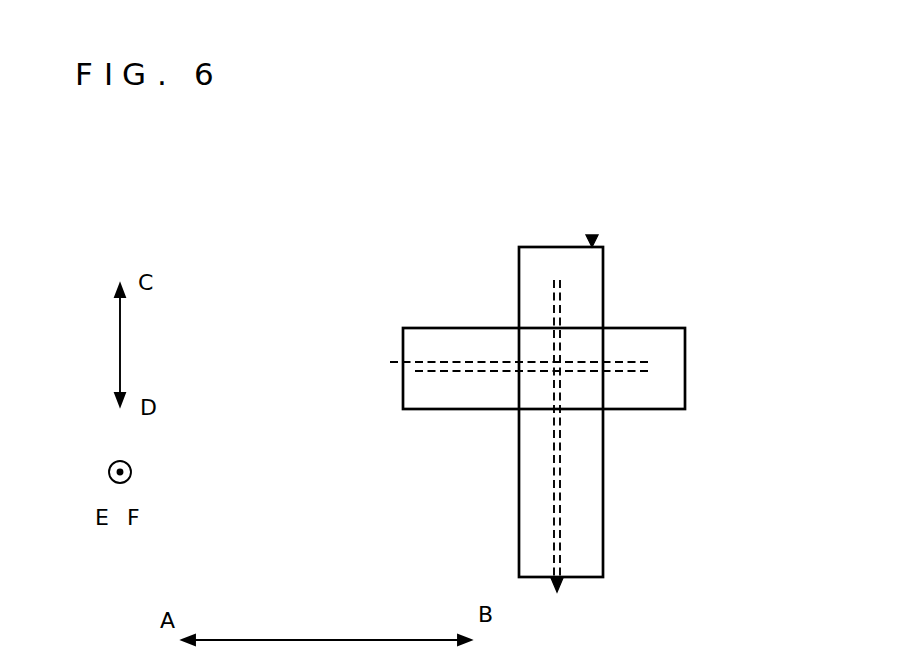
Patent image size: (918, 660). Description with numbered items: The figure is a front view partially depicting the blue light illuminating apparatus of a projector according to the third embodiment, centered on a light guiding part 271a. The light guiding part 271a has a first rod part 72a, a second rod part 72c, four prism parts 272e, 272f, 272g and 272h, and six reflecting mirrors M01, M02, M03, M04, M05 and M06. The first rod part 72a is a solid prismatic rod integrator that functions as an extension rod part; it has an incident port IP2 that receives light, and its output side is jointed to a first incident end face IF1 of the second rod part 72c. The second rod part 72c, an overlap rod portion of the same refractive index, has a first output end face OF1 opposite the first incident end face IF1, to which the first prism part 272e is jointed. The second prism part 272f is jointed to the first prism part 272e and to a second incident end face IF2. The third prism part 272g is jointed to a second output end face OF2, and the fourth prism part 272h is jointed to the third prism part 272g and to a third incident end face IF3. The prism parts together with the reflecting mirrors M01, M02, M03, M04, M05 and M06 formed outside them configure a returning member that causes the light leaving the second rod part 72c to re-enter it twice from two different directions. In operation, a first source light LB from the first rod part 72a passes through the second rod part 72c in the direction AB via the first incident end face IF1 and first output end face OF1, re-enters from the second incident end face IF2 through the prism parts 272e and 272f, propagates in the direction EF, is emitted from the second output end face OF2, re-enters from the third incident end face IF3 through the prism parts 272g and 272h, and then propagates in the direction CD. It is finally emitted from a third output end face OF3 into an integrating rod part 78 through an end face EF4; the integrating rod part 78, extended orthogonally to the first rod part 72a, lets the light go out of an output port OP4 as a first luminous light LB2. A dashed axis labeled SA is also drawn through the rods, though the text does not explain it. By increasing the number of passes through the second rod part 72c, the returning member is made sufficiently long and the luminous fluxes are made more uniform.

The light guiding part 271a is at (593, 235).
The third incident end face IF3 is at (556, 322).
The reflecting mirror M06 is at (562, 260).
The third prism part 272g is at (517, 327).
The reflecting mirror M05 is at (519, 300).
The fourth prism part 272h is at (580, 320).
The second output end face OF2 is at (603, 283).
The first rod part 72a is at (410, 327).
The reflecting mirror M04 is at (603, 327).
The first output end face OF1 is at (633, 328).
The second incident end face IF2 is at (533, 350).
The first incident end face IF1 is at (517, 355).
The first source light LB is at (405, 361).
The first prism part 272e is at (684, 328).
The second prism part 272f is at (668, 362).
The reflecting mirror M01 is at (658, 373).
The reflecting mirror M02 is at (658, 395).
The incident port IP2 is at (402, 390).
The slide axis SA is at (439, 372).
The reflecting mirror M03 is at (545, 386).
The second rod part 72c is at (574, 408).
The third output end face OF3 is at (545, 415).
The end face EF4 is at (602, 423).
The first luminous light LB2 is at (567, 542).
The integrating rod part 78 is at (605, 550).
The output port OP4 is at (590, 577).